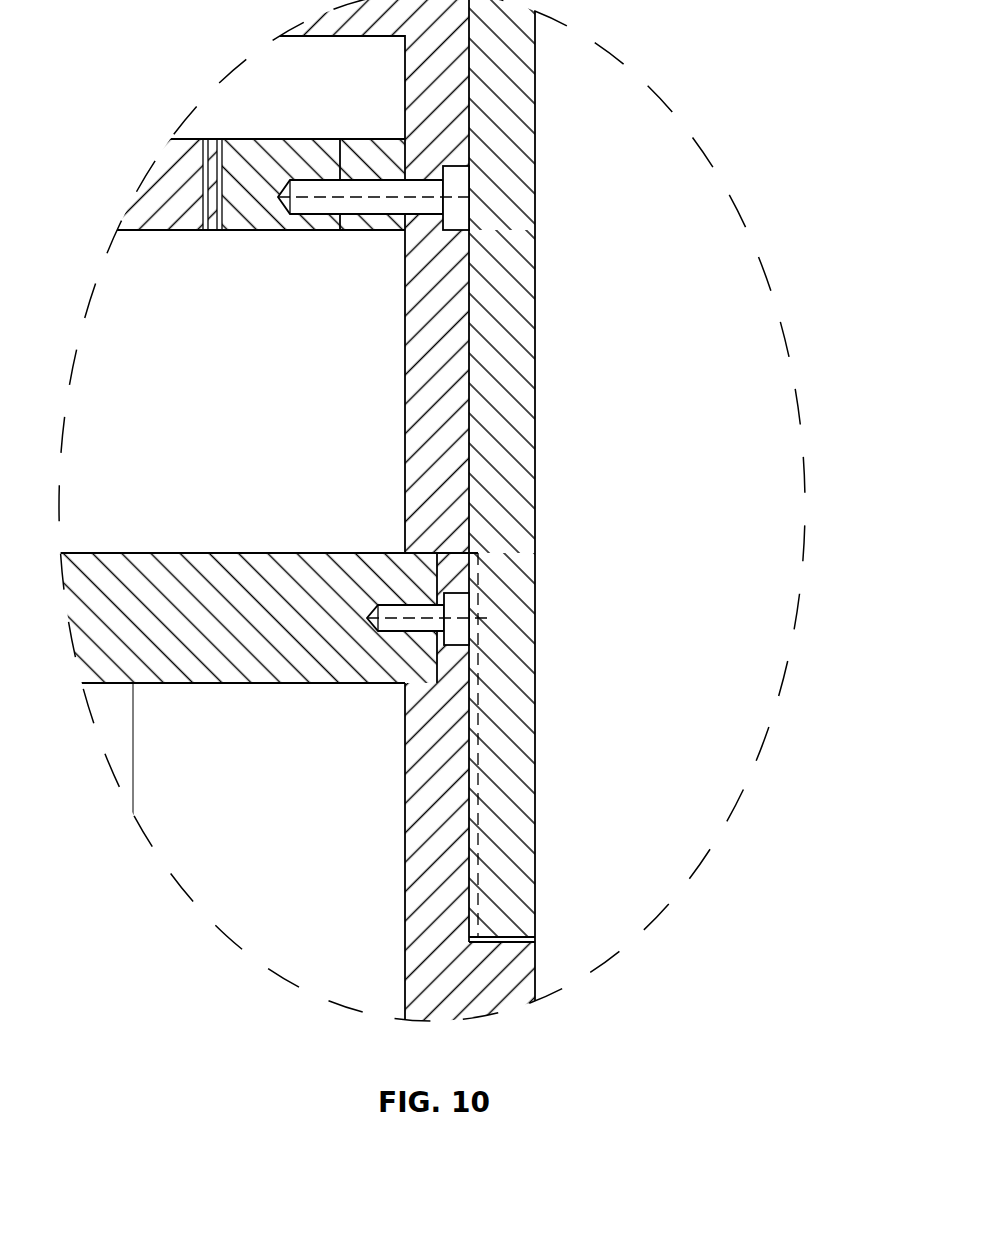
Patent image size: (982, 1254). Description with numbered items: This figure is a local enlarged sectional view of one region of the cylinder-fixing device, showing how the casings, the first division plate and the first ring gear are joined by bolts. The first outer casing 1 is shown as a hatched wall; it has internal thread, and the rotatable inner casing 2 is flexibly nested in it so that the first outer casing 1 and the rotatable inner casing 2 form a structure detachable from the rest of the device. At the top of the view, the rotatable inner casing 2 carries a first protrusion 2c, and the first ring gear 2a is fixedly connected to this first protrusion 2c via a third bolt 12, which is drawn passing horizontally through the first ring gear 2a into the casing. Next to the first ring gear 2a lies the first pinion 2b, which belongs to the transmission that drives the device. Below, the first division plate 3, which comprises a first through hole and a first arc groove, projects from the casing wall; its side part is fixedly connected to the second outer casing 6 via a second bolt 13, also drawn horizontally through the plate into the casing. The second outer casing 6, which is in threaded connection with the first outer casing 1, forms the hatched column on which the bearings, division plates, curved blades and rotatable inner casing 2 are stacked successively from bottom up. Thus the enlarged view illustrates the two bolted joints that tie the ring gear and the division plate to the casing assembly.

The first outer casing 1 is at (503, 500).
The rotatable inner casing 2 is at (437, 118).
The first ring gear 2a is at (238, 163).
The first pinion 2b is at (183, 195).
The first protrusion 2c is at (380, 158).
The first division plate 3 is at (148, 595).
The second outer casing 6 is at (435, 875).
The third bolt 12 is at (423, 191).
The second bolt 13 is at (457, 630).